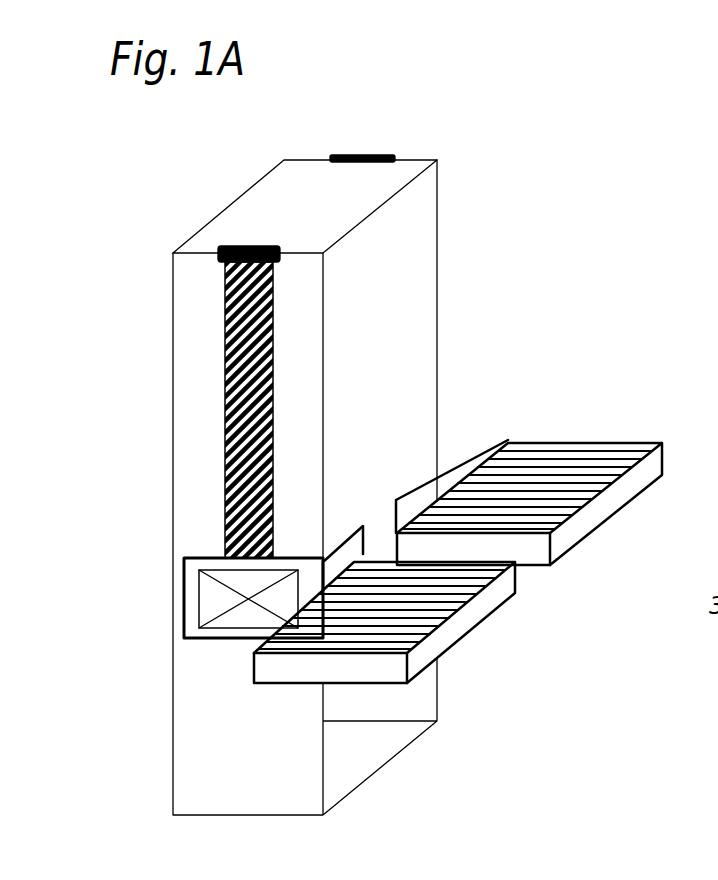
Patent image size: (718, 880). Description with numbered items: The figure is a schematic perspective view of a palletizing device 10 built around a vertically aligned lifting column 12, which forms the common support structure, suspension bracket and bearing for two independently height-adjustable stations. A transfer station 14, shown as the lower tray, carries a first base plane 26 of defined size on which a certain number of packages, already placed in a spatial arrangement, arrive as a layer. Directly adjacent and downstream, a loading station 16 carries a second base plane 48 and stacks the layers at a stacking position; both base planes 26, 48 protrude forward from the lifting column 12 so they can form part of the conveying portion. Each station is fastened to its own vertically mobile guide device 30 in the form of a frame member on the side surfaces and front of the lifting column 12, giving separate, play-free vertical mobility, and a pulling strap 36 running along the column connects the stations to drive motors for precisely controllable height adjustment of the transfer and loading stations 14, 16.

The palletizing device 10 is at (440, 144).
The lifting column 12 is at (278, 200).
The transfer station 14 is at (433, 635).
The first base plane 26 is at (423, 622).
The loading station 16 is at (530, 442).
The second base plane 48 is at (551, 455).
The guide device 30 is at (197, 582).
The pulling strap 36 is at (243, 362).